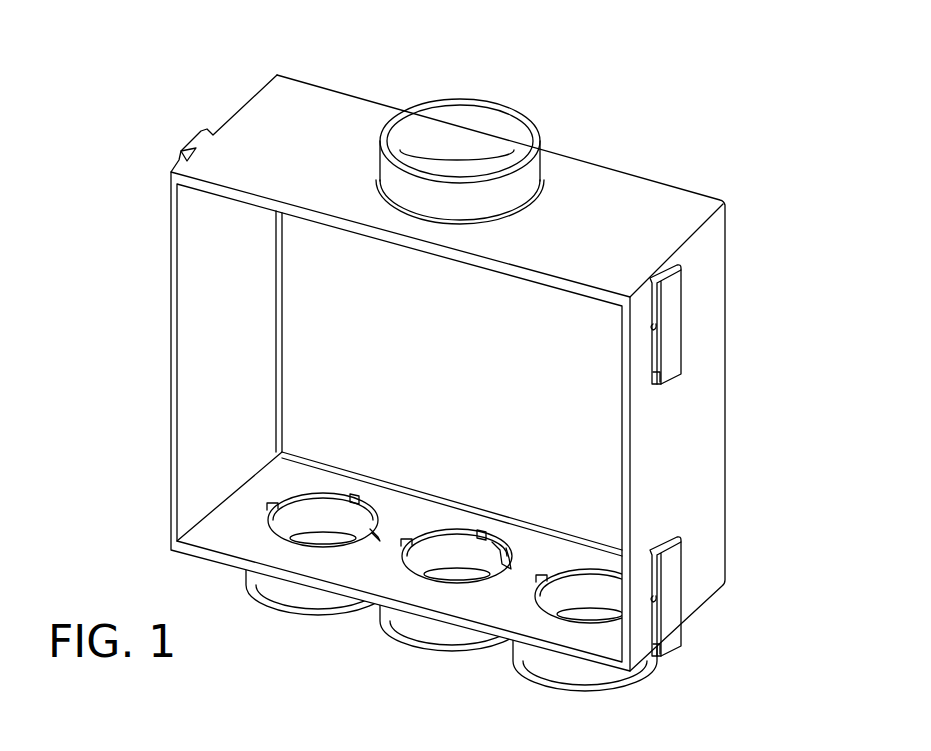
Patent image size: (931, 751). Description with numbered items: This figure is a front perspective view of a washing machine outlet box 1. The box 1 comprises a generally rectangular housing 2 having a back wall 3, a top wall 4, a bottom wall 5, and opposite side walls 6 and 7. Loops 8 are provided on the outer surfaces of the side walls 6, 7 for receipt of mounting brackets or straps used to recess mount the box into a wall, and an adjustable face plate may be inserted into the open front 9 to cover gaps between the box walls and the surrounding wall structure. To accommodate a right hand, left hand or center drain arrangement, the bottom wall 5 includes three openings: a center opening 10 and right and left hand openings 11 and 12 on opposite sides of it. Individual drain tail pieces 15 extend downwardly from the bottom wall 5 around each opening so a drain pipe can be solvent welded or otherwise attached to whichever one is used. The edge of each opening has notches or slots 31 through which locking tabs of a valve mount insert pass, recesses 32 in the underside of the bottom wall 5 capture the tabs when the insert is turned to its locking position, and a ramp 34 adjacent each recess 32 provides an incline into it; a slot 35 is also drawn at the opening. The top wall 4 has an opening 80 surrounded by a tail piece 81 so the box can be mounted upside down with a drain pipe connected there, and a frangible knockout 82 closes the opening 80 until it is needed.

The box 1 is at (184, 94).
The housing 2 is at (740, 231).
The back wall 3 is at (370, 331).
The top wall 4 is at (349, 108).
The bottom wall 5 is at (243, 545).
The side wall 6 is at (188, 330).
The side wall 7 is at (703, 398).
The loops 8 is at (673, 313).
The open front 9 is at (205, 409).
The center opening 10 is at (493, 528).
The right hand opening 11 is at (590, 588).
The left hand opening 12 is at (318, 510).
The drain tail pieces 15 is at (308, 602).
The notches 31 is at (406, 540).
The recesses 32 is at (492, 540).
The ramp 34 is at (479, 536).
The slot 35 is at (490, 552).
The opening 80 is at (452, 146).
The tail piece 81 is at (541, 154).
The frangible knockout 82 is at (430, 158).